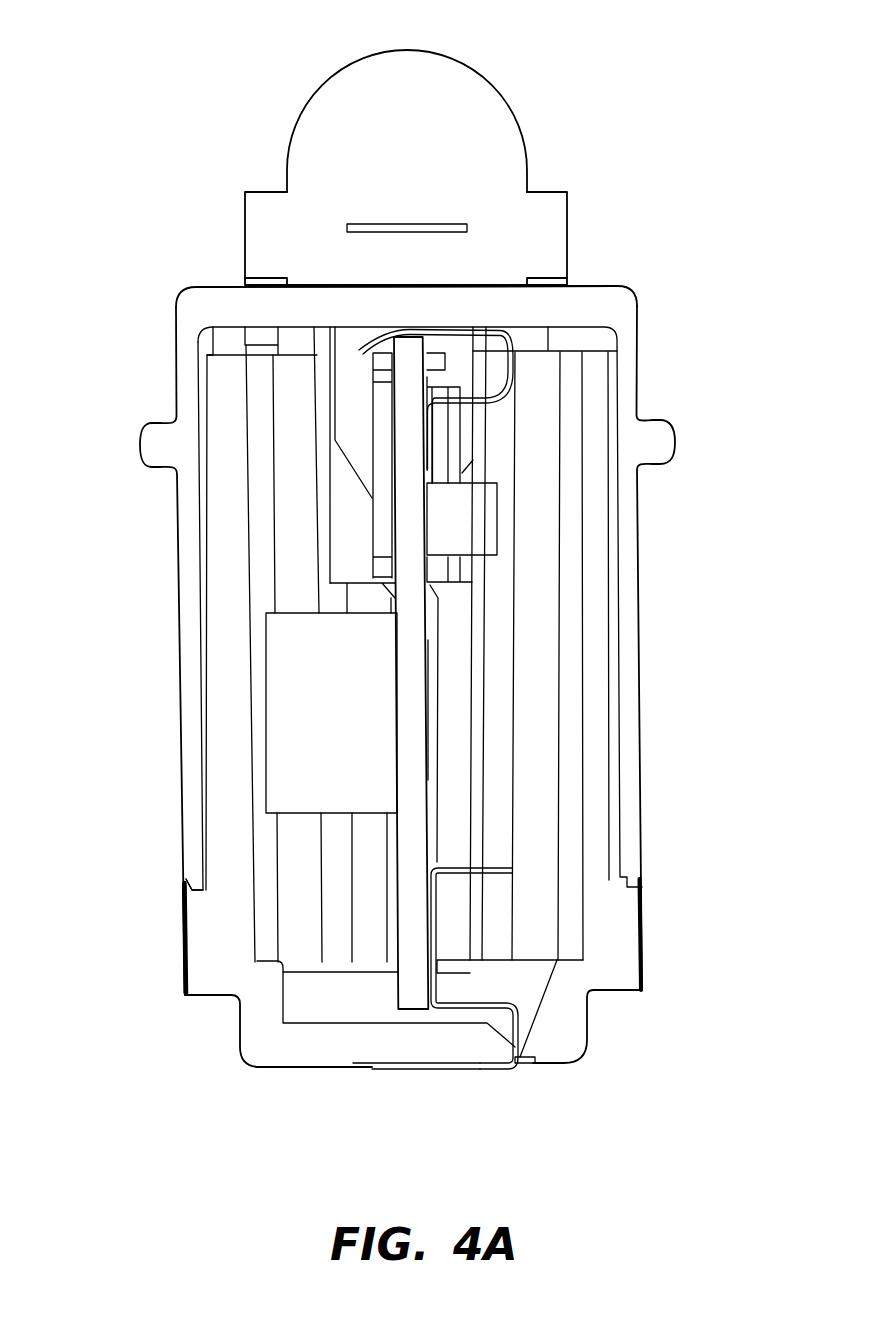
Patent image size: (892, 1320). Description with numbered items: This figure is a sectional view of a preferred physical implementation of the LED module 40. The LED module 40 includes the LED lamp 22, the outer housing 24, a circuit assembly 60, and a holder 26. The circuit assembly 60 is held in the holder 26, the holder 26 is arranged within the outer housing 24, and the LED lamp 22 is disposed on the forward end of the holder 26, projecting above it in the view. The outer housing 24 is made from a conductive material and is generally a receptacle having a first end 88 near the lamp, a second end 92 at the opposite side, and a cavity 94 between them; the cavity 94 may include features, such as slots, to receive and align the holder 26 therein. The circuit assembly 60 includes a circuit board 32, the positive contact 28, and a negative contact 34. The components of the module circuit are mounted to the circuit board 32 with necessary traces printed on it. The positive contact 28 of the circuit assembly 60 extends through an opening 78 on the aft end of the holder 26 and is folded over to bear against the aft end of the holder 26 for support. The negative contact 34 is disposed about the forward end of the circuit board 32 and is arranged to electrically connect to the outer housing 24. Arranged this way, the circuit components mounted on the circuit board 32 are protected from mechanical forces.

The LED module 40 is at (542, 44).
The LED lamp 22 is at (328, 78).
The first end 88 is at (218, 288).
The negative contact 34 is at (500, 343).
The outer housing 24 is at (637, 368).
The cavity 94 is at (203, 567).
The circuit assembly 60 is at (424, 576).
The circuit board 32 is at (428, 720).
The second end 92 is at (185, 890).
The holder 26 is at (620, 992).
The positive contact 28 is at (437, 1070).
The opening 78 is at (518, 1062).